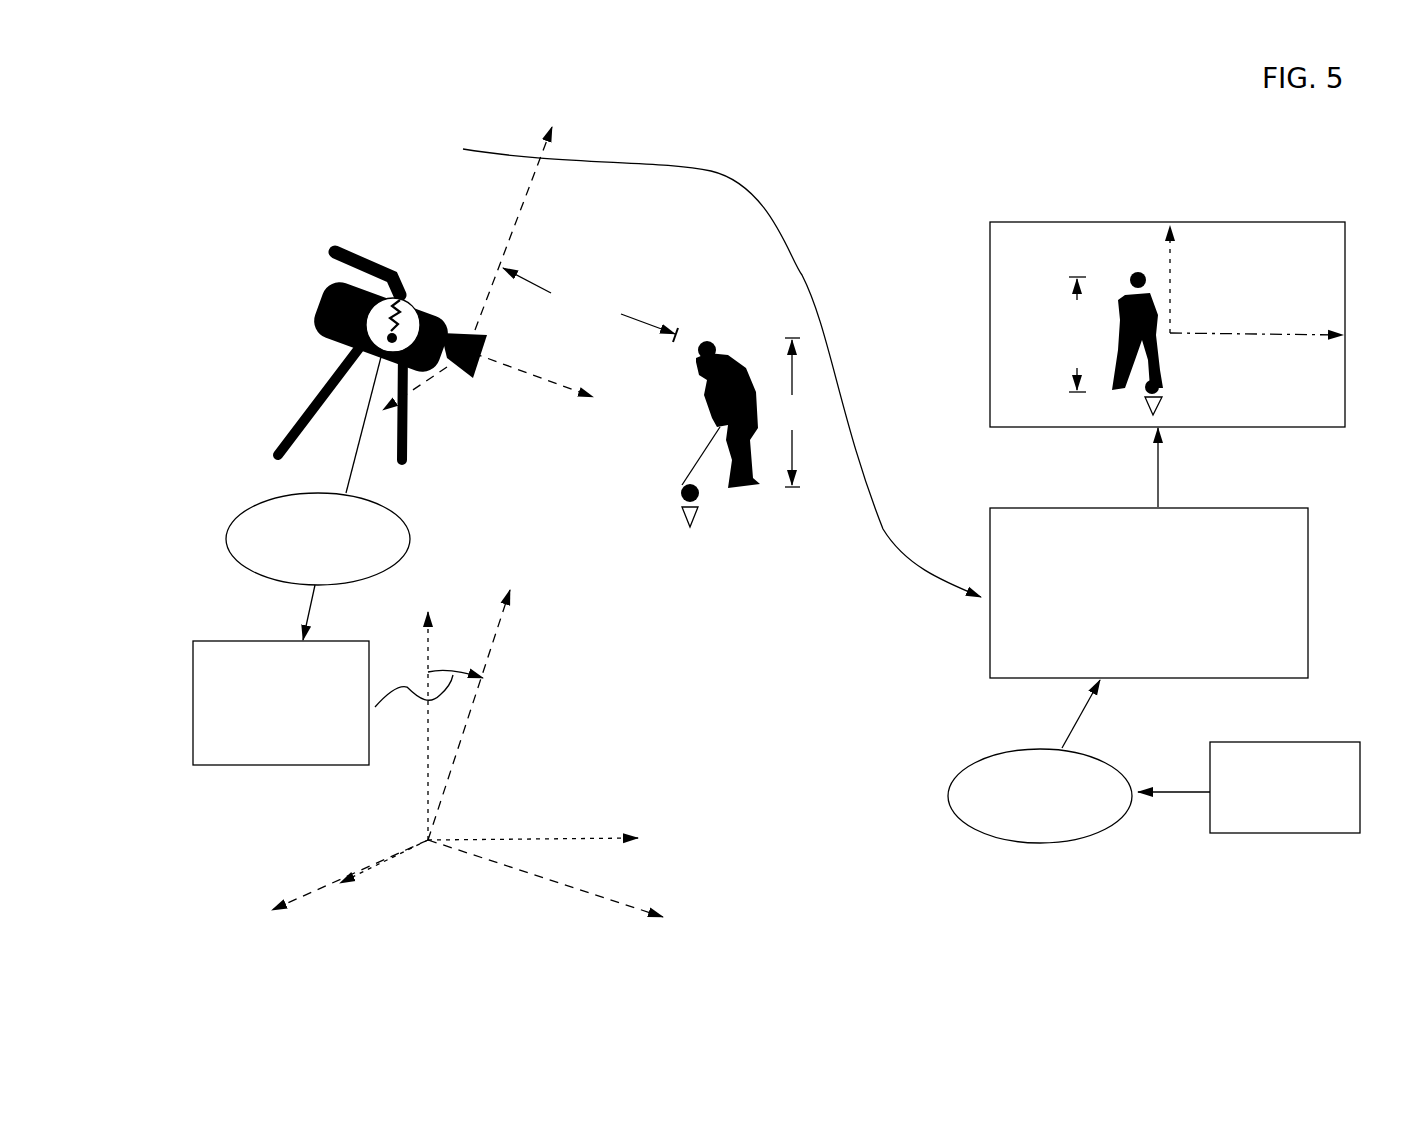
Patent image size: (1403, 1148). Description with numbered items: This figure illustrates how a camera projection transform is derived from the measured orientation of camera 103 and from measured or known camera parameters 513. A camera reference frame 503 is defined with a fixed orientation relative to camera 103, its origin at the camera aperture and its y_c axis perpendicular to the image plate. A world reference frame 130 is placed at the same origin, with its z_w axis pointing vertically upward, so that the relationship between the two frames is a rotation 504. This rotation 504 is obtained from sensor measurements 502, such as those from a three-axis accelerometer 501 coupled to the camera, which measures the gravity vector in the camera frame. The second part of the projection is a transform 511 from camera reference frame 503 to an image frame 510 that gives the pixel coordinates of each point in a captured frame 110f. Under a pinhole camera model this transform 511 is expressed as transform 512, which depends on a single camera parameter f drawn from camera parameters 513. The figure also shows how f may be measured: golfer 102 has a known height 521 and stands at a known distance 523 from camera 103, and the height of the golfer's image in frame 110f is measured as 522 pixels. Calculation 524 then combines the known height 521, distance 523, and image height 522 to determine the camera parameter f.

The camera 103 is at (323, 304).
The three-axis accelerometer 501 is at (408, 316).
The camera reference frame 503 is at (560, 136).
The distance 523 is at (592, 288).
The golfer 102 is at (724, 352).
The height of golfer 521 is at (811, 429).
The frame 110f is at (1092, 222).
The image frame 510 is at (1207, 238).
The height of golfer's image 522 is at (1057, 323).
The transform from camera reference frame to image frame 511 is at (1308, 557).
The pinhole camera model transform 512 is at (1207, 640).
The camera parameters 513 is at (962, 790).
The calculation 524 is at (1308, 742).
The measurements 502 is at (240, 512).
The rotation 504 is at (257, 640).
The world reference frame 130 is at (440, 568).